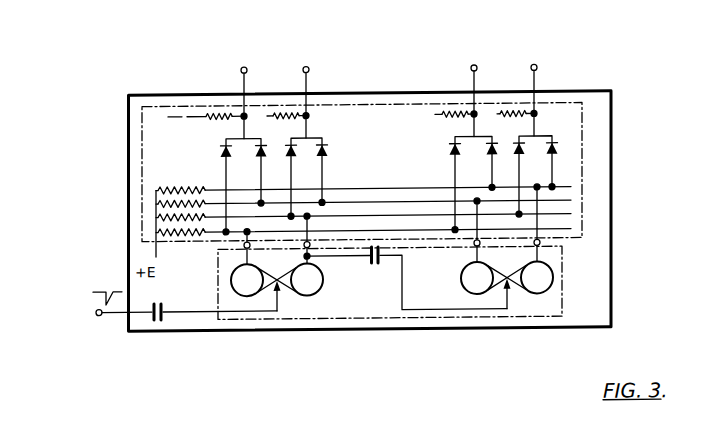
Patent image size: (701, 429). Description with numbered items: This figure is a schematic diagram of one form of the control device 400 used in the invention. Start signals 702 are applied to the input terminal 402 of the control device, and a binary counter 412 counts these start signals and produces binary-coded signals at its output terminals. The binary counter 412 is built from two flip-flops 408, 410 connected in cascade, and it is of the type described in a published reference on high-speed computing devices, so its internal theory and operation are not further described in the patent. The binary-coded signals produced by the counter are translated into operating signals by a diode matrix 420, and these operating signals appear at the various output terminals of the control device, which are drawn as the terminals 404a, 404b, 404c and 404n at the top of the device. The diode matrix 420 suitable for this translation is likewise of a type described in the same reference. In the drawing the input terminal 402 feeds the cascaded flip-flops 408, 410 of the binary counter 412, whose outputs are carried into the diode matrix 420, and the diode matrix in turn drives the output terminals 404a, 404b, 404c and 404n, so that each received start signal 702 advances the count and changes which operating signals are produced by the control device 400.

The signal processing circuit 400 is at (612, 154).
The diode matrix 420 is at (403, 172).
The binary counter 412 is at (217, 280).
The input terminal 404a is at (248, 66).
The input terminal 404b is at (310, 66).
The input terminal 404c is at (475, 66).
The input terminal 404n is at (535, 66).
The flip-flop 408 is at (311, 295).
The flip-flop 410 is at (533, 295).
The input terminal 402 is at (97, 312).
The start signals 702 is at (104, 284).